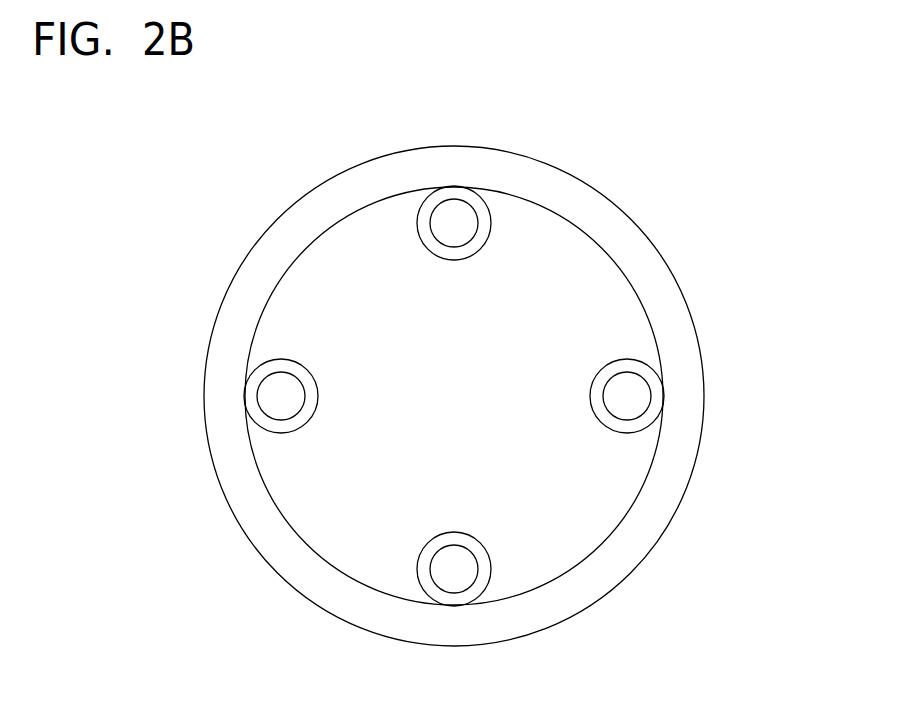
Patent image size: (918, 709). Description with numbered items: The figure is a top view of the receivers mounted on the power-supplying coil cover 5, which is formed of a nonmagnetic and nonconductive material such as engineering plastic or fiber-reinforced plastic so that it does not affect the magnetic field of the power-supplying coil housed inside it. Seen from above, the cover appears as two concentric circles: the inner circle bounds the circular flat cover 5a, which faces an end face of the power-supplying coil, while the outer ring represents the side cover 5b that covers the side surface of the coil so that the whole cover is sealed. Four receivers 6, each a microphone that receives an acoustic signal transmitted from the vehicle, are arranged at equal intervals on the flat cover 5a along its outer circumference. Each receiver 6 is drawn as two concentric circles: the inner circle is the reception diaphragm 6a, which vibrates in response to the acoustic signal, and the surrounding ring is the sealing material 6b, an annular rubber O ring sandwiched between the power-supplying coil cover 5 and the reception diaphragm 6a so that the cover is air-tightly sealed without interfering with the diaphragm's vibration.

The power-supplying coil cover 5 is at (445, 396).
The flat cover 5a is at (609, 272).
The side cover 5b is at (206, 394).
The receiver 6 is at (454, 396).
The reception diaphragm 6a is at (470, 222).
The sealing material 6b is at (418, 230).